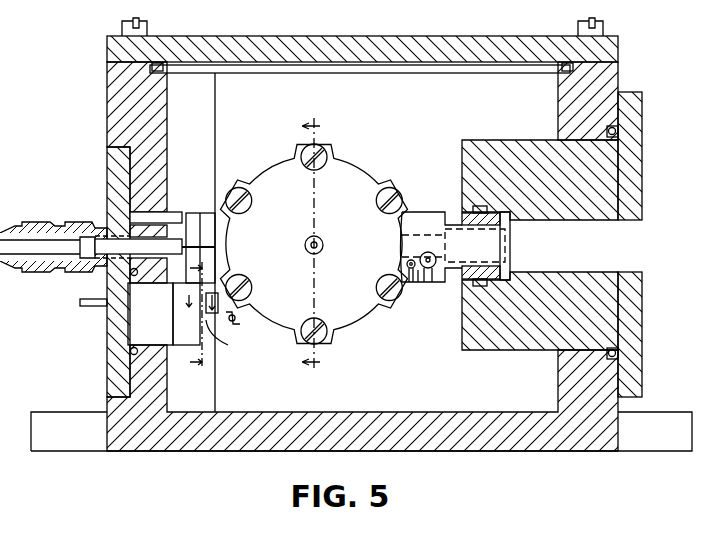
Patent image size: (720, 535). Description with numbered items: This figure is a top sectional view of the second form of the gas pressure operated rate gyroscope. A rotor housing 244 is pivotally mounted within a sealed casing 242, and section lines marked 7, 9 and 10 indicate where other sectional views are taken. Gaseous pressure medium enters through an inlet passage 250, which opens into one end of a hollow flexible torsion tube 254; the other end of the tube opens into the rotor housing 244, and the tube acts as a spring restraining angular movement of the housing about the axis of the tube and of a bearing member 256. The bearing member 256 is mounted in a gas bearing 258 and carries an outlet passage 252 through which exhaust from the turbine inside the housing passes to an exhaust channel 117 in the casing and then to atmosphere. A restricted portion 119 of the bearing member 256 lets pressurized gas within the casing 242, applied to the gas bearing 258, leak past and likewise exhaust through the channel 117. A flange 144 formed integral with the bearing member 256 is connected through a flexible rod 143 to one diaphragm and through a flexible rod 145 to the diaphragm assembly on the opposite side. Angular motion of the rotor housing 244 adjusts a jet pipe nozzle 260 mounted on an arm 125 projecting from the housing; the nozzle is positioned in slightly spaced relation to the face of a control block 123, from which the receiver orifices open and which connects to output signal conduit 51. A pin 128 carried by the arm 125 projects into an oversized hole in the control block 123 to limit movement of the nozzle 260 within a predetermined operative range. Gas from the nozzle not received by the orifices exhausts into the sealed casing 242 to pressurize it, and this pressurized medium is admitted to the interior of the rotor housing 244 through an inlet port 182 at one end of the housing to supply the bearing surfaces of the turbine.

The inlet passage 250 is at (40, 226).
The hollow flexible torsion tube 254 is at (194, 215).
The output signal conduit 51 is at (92, 308).
The jet pipe nozzle 260 is at (205, 312).
The inlet port 182 is at (320, 242).
The rotor housing 244 is at (296, 279).
The section line 7- 7 is at (318, 245).
The section line 9- 9 is at (200, 304).
The section line 10- 10 is at (203, 316).
The flange 144 is at (411, 214).
The flexible rod 145 is at (431, 252).
The outlet passage 252 is at (402, 244).
The flexible rod 143 is at (406, 264).
The bearing member 256 is at (426, 286).
The gas bearing 258 is at (466, 288).
The restricted portion 119 is at (512, 246).
The exhaust channel 117 is at (642, 262).
The arm 125 is at (240, 320).
The pin 128 is at (219, 340).
The control block 123 is at (181, 347).
The sealed casing 242 is at (545, 451).